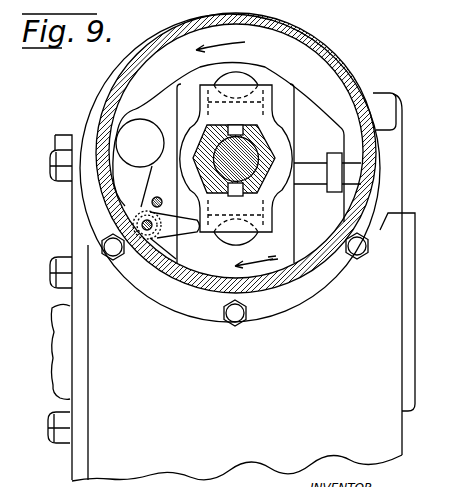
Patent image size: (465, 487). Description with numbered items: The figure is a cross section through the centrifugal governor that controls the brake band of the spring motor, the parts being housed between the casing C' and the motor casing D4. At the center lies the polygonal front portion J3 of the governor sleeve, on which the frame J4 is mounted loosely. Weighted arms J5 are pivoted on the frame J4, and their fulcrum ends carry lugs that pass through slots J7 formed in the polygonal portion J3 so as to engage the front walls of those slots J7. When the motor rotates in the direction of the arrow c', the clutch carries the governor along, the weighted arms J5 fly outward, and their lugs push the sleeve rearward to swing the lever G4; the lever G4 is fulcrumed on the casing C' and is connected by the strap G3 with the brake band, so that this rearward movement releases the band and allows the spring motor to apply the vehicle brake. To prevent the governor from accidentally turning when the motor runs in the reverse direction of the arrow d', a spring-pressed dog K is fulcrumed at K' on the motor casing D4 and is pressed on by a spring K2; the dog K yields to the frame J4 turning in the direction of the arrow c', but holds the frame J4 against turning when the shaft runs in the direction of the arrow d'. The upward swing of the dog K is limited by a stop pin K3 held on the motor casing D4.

The casing C' is at (231, 247).
The motor casing D4 is at (338, 58).
The arrow c' is at (220, 40).
The arrow d' is at (256, 257).
The polygonal front portion of the sleeve J3 is at (265, 136).
The frame J4 is at (190, 125).
The weighted arms J5 is at (243, 241).
The slots J7 is at (237, 190).
The strap G3 is at (333, 153).
The lever G4 is at (307, 170).
The dog K is at (175, 235).
The spring K2 is at (130, 213).
The stop pin K3 is at (158, 197).
The fulcrum of the dog K' is at (154, 263).